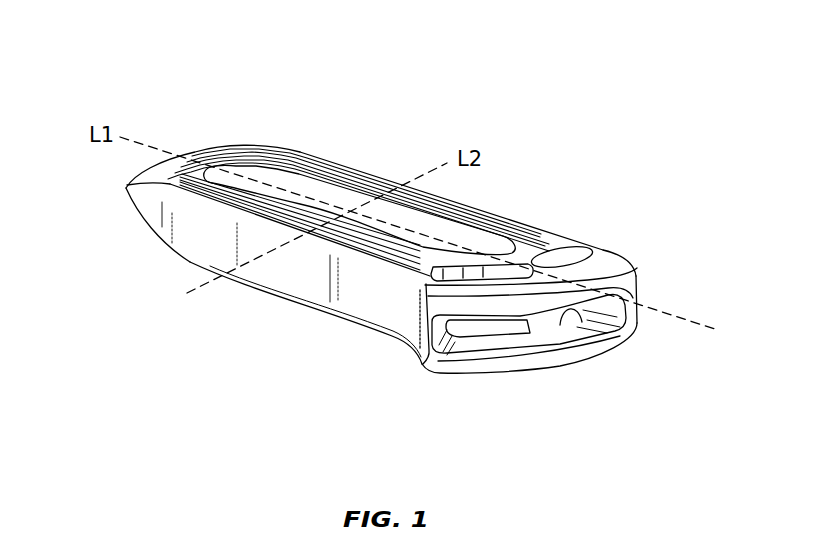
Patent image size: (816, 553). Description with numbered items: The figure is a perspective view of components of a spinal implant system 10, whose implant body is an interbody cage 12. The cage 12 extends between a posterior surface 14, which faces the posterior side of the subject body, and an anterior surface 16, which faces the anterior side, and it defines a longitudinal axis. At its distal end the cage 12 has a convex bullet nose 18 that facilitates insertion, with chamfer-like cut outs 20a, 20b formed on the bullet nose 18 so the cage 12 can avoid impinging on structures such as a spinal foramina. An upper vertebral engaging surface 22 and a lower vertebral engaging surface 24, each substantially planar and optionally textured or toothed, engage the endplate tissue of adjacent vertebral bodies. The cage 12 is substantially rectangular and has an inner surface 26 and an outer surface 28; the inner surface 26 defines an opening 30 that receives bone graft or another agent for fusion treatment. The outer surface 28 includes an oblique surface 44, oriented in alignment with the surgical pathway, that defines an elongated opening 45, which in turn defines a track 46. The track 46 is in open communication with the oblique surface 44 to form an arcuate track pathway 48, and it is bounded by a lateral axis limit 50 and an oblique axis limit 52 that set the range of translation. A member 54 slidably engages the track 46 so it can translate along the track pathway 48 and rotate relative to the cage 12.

The spinal implant system 10 is at (300, 65).
The interbody cage 12 is at (306, 156).
The posterior surface 14 is at (344, 166).
The anterior surface 16 is at (302, 273).
The bullet nose 18 is at (127, 192).
The cut out 20a is at (217, 147).
The cut out 20b is at (150, 232).
The vertebral engaging surface 22 is at (545, 250).
The vertebral engaging surface 24 is at (353, 315).
The inner surface 26 is at (480, 240).
The outer surface 28 is at (405, 326).
The opening 30 is at (423, 225).
The oblique surface 44 is at (636, 266).
The elongated opening 45 is at (595, 260).
The track 46 is at (567, 252).
The track pathway 48 is at (552, 315).
The lateral axis limit 50 is at (636, 298).
The oblique axis limit 52 is at (437, 356).
The member 54 is at (535, 325).